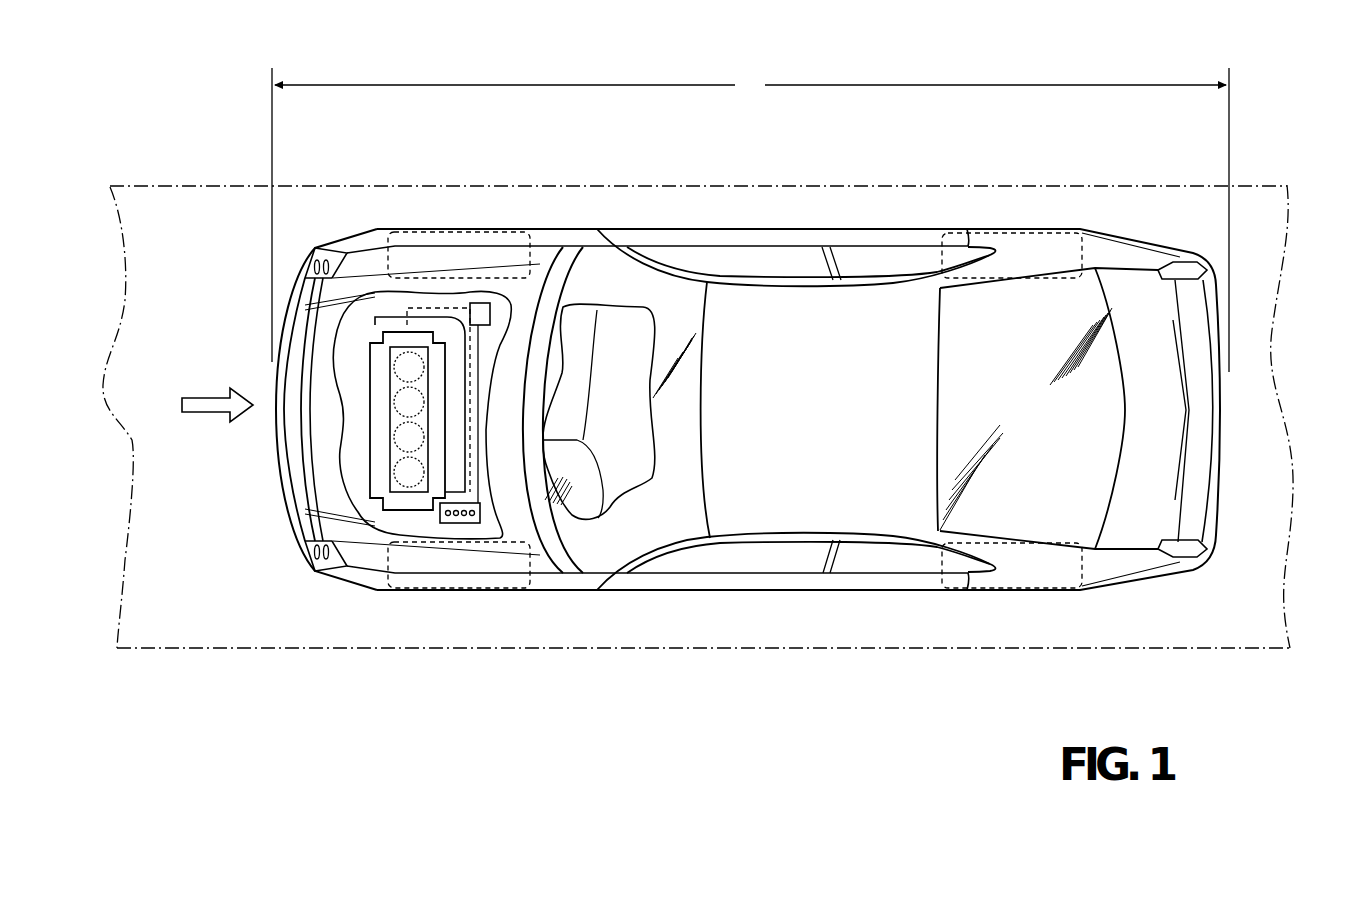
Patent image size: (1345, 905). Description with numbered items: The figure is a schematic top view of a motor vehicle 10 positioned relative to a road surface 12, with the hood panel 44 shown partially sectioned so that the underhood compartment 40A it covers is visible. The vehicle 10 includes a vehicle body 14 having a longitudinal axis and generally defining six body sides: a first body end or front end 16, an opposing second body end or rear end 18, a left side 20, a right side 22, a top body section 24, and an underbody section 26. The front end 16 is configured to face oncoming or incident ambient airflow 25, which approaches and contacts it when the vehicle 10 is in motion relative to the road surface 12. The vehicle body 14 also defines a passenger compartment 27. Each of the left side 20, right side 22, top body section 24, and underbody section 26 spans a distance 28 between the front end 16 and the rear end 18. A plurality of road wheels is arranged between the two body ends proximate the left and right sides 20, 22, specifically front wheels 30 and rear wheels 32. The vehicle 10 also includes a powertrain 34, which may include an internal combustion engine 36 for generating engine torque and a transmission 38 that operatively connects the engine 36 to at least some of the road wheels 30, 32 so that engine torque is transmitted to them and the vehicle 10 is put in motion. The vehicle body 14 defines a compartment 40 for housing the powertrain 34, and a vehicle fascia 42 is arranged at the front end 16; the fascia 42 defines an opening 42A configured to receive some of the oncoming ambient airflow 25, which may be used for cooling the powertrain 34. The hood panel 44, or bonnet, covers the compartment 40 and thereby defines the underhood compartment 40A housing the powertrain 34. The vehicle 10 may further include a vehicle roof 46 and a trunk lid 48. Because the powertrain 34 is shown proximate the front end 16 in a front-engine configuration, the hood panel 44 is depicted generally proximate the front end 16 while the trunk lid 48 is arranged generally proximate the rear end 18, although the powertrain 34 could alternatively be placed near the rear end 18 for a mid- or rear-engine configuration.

The motor vehicle 10 is at (250, 668).
The road surface 12 is at (118, 186).
The vehicle body 14 is at (800, 313).
The front end 16 is at (280, 358).
The rear end 18 is at (1232, 367).
The left side 20 is at (745, 597).
The right side 22 is at (690, 227).
The top body section 24 is at (826, 406).
The ambient airflow 25 is at (207, 396).
The underbody section 26 is at (889, 227).
The passenger compartment 27 is at (612, 470).
The distance 28 is at (750, 220).
The front wheels 30 is at (463, 231).
The rear wheels 32 is at (1090, 249).
The powertrain 34 is at (367, 458).
The internal combustion engine 36 is at (378, 375).
The transmission 38 is at (378, 323).
The compartment 40 is at (428, 518).
The underhood compartment 40A is at (405, 515).
The vehicle fascia 42 is at (288, 450).
The opening 42A is at (288, 416).
The hood panel 44 is at (337, 503).
The vehicle roof 46 is at (924, 390).
The trunk lid 48 is at (1140, 300).